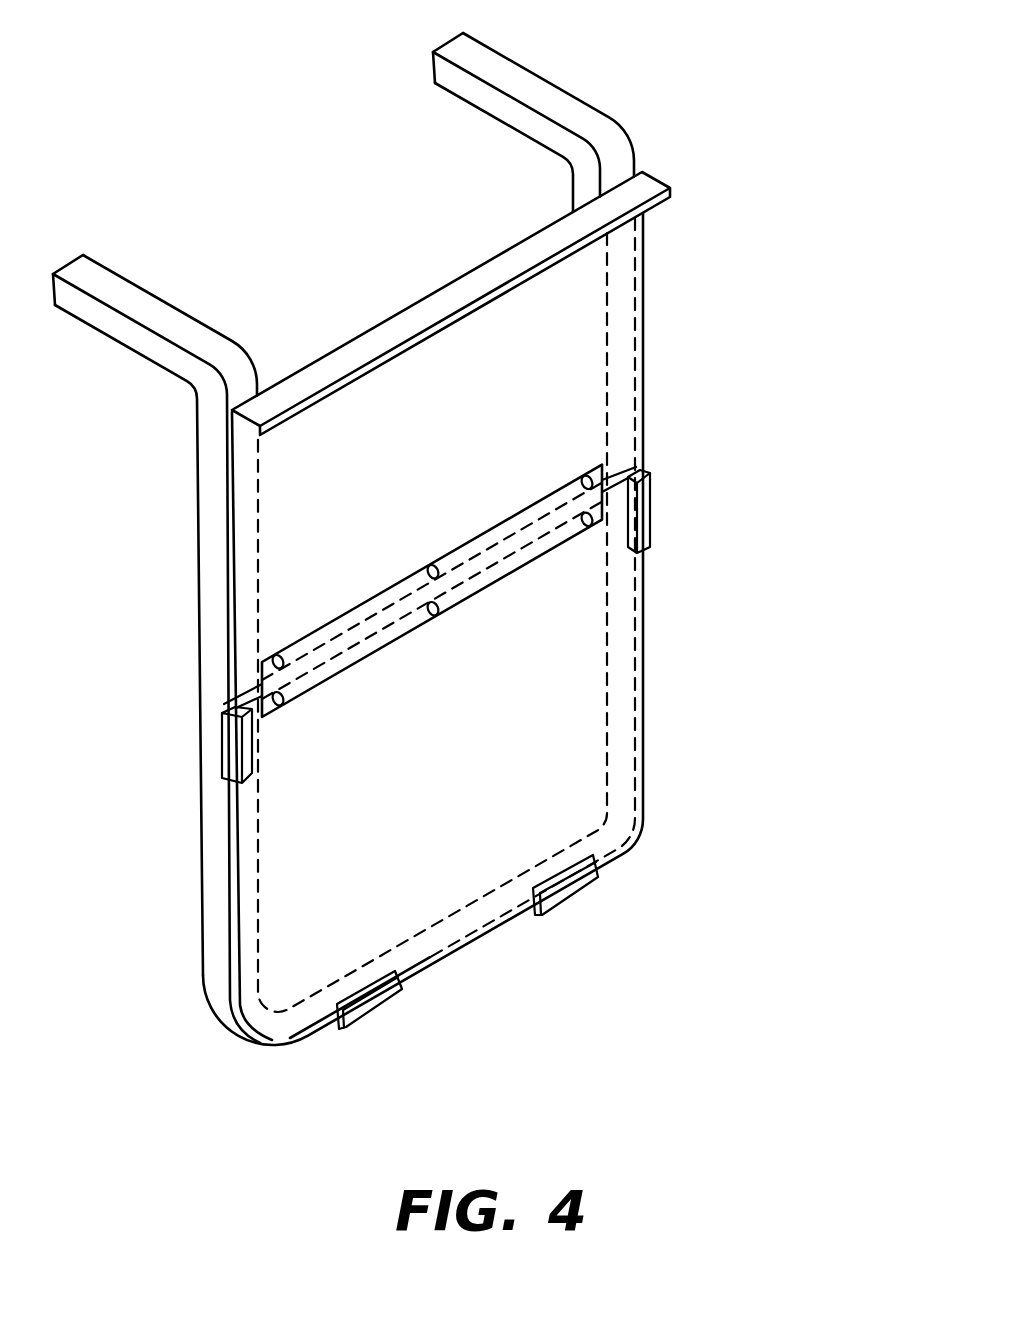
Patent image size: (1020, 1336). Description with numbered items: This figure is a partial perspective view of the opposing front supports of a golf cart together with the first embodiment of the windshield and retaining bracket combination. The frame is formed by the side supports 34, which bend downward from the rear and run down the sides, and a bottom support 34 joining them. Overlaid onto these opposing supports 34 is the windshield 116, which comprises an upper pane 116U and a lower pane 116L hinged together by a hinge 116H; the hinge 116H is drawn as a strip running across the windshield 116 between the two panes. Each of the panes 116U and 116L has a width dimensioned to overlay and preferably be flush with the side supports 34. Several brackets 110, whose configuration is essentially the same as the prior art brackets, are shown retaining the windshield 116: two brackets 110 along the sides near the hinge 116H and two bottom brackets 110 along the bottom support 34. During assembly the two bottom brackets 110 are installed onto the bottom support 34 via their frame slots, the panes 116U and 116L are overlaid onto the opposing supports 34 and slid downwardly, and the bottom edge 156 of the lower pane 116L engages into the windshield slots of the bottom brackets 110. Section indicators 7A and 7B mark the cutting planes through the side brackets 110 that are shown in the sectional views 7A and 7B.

The side supports 34 is at (563, 100).
The windshield 116 is at (645, 730).
The upper pane 116U is at (450, 430).
The lower pane 116L is at (483, 758).
The hinge 116H is at (410, 630).
The brackets 110 is at (252, 755).
The bottom edge 156 is at (470, 943).
The section view indicator 7A is at (200, 775).
The section view indicator 7B is at (200, 734).